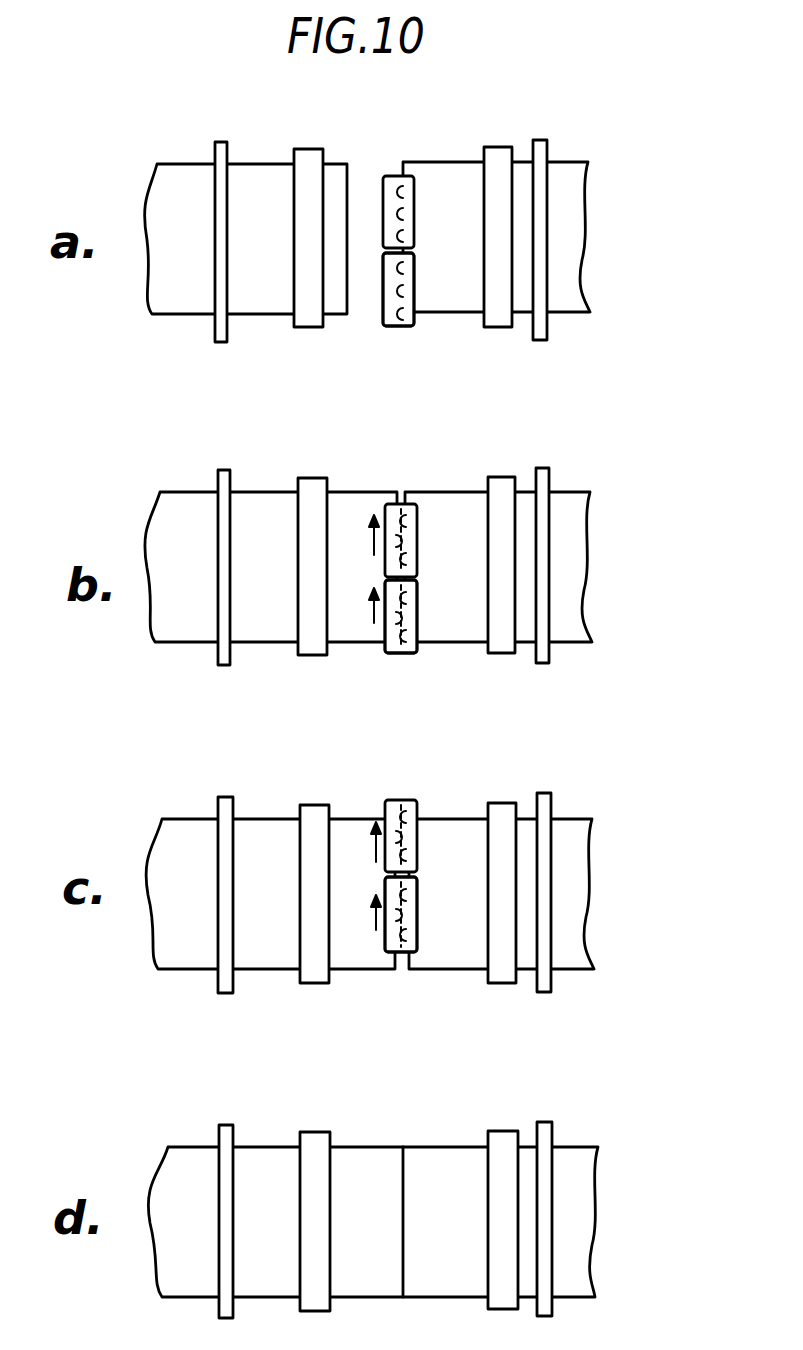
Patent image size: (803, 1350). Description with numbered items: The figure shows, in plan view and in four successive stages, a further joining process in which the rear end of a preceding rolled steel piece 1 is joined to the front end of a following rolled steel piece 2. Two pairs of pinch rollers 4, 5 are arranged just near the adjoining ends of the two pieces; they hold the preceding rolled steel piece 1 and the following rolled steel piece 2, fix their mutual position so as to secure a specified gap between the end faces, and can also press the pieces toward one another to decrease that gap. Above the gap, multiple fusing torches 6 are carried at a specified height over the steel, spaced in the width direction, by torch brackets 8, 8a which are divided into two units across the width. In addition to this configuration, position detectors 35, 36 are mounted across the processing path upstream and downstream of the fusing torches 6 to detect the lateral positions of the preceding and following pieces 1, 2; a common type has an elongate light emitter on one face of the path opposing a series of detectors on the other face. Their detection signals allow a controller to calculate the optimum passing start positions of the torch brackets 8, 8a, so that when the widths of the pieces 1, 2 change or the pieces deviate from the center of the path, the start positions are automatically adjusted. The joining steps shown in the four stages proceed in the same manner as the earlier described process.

The preceding rolled steel piece 1 is at (588, 186).
The following rolled steel piece 2 is at (172, 196).
The pinch rollers 4 is at (314, 158).
The pinch rollers 5 is at (494, 158).
The fusing torches 6 is at (412, 207).
The torch bracket 8 is at (400, 176).
The torch bracket 8a is at (416, 320).
The position detector 35 is at (541, 141).
The position detector 36 is at (221, 142).